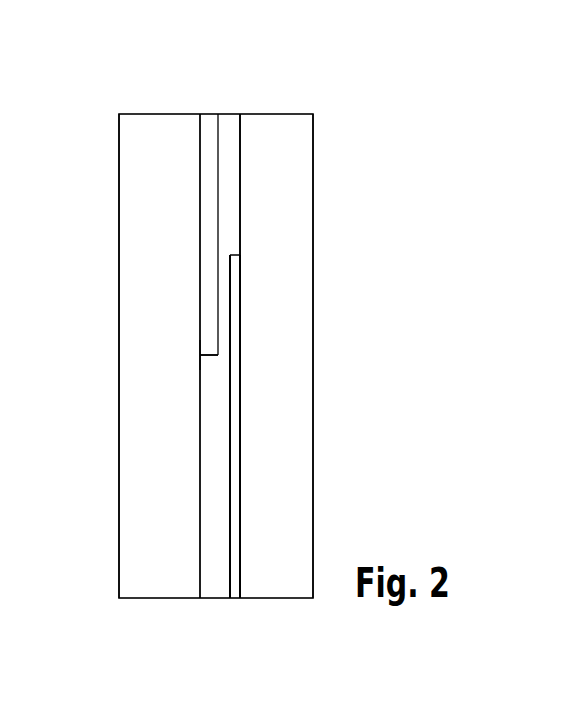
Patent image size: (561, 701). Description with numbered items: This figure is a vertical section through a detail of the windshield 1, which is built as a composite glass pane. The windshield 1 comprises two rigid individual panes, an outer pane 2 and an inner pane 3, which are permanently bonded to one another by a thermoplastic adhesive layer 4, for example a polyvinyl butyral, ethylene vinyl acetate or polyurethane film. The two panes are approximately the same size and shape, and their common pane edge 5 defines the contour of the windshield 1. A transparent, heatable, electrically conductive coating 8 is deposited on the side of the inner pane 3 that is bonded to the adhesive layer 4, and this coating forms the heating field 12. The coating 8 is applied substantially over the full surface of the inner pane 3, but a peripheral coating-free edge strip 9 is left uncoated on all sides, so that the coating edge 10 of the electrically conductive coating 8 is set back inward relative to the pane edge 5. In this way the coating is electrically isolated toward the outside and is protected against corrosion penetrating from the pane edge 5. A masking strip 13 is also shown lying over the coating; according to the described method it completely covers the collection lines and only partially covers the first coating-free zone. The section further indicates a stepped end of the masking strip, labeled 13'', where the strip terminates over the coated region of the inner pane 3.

The windshield 1 is at (334, 129).
The outer pane 2 is at (157, 570).
The inner pane 3 is at (273, 575).
The adhesive layer 4 is at (212, 572).
The pane edge 5 is at (246, 598).
The electrically conductive coating 8 is at (235, 398).
The heating field 12 is at (352, 403).
The peripheral coating-free edge strip 9 is at (240, 170).
The coating edge 10 is at (233, 253).
The masking strip 13 is at (211, 194).
The layer step edge 13'' is at (137, 372).